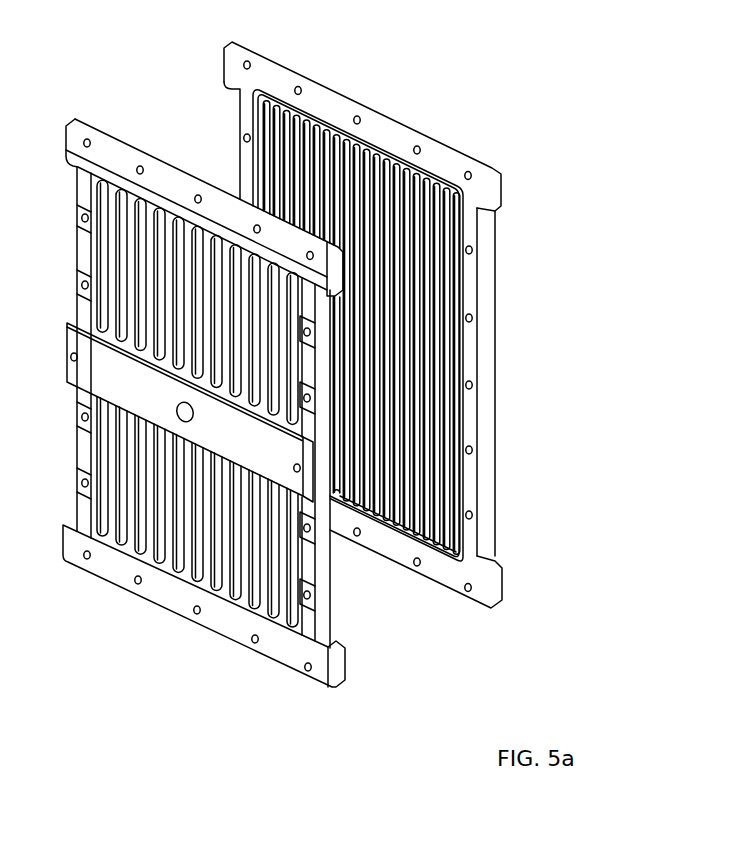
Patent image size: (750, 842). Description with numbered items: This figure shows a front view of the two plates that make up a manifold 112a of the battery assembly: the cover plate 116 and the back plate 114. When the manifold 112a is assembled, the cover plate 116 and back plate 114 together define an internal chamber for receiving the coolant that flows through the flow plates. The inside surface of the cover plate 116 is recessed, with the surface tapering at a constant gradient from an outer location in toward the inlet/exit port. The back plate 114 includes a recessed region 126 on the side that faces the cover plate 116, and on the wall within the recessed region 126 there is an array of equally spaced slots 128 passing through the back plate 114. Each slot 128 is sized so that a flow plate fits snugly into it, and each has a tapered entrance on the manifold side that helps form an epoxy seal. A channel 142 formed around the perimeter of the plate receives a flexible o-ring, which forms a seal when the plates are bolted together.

The manifold 112a is at (634, 316).
The back plate 114 is at (501, 588).
The cover plate 116 is at (289, 658).
The channel 142 is at (258, 88).
The slots 128 is at (372, 152).
The recessed region 126 is at (440, 542).